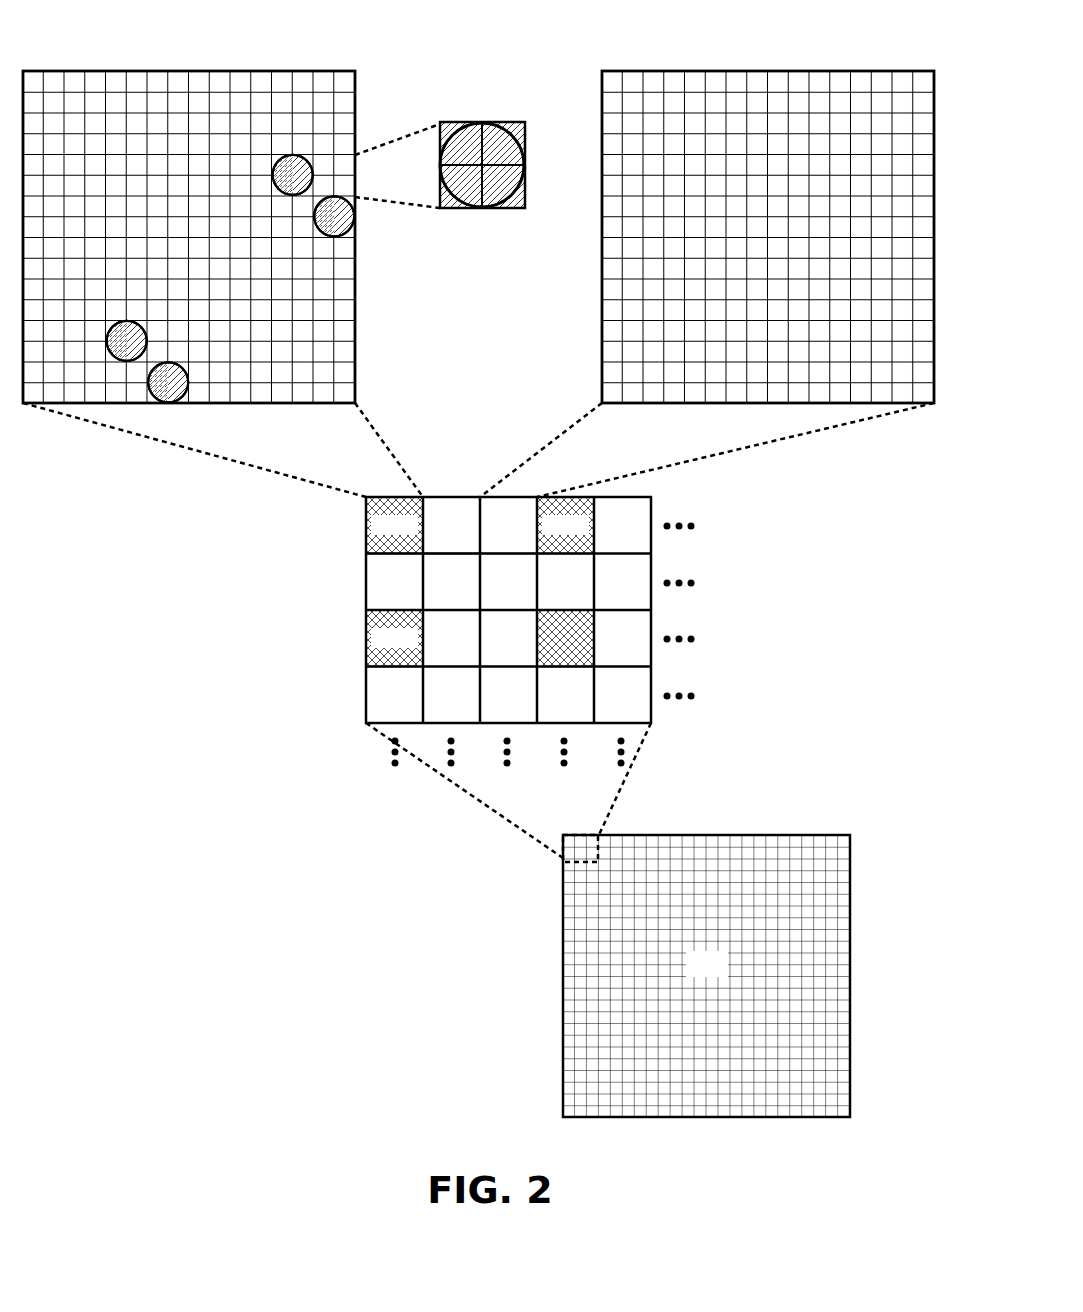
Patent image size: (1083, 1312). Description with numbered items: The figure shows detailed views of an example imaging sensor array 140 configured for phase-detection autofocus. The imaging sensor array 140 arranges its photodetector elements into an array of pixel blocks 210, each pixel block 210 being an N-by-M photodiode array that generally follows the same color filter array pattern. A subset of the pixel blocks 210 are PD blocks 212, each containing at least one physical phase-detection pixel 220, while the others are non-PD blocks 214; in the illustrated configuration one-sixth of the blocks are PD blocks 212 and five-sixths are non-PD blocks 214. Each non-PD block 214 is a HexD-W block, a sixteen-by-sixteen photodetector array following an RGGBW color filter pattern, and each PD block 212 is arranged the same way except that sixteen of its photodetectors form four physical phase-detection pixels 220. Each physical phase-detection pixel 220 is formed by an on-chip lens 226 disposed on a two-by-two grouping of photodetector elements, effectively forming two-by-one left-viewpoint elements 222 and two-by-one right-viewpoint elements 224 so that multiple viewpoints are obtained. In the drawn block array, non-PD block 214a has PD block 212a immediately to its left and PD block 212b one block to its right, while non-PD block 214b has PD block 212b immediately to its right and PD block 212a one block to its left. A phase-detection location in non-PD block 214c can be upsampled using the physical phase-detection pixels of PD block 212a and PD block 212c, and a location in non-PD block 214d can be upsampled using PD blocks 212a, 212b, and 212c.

The imaging sensor array 140 is at (706, 976).
The pixel block 210 is at (485, 632).
The PD block 212 is at (94, 70).
The PD block 212a is at (394, 525).
The PD block 212b is at (565, 525).
The PD block 212c is at (394, 638).
The non-PD block 214 is at (674, 70).
The non-PD block 214a is at (451, 525).
The non-PD block 214b is at (508, 525).
The non-PD block 214c is at (394, 582).
The non-PD block 214d is at (451, 582).
The physical phase-detection pixel 220 is at (459, 154).
The left-viewpoint elements 222 is at (455, 208).
The right-viewpoint elements 224 is at (508, 207).
The on-chip lens 226 is at (518, 122).